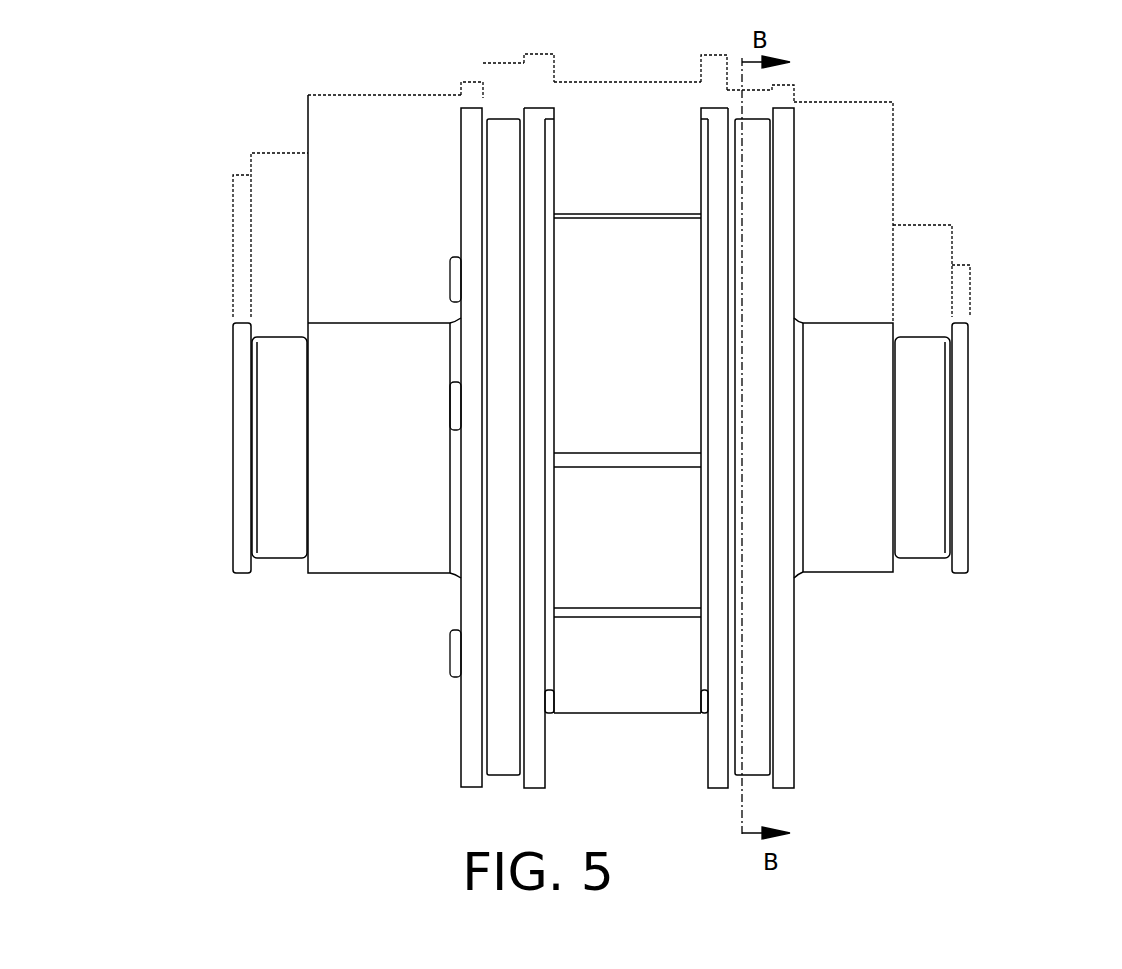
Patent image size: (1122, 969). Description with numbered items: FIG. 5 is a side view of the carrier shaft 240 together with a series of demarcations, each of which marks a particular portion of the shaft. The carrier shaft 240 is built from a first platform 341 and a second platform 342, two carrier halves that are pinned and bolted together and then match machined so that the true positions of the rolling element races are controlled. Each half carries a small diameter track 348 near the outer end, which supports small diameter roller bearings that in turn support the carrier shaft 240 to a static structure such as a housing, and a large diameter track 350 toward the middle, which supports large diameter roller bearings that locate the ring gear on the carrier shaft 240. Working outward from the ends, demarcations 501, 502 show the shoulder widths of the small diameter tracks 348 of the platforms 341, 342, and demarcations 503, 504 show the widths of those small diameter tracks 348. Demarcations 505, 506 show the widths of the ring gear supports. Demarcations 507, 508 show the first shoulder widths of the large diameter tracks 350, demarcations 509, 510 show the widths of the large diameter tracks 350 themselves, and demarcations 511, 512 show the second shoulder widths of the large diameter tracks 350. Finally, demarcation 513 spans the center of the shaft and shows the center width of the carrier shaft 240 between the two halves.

The carrier shaft 240 is at (1098, 103).
The first platform 341 is at (168, 692).
The second platform 342 is at (1022, 661).
The small diameter track 348 is at (278, 450).
The large diameter track 350 is at (629, 395).
The demarcation 501 is at (232, 363).
The demarcation 502 is at (971, 405).
The demarcation 503 is at (279, 221).
The demarcation 504 is at (922, 258).
The demarcation 505 is at (384, 374).
The demarcation 506 is at (843, 329).
The demarcation 507 is at (464, 422).
The demarcation 508 is at (772, 85).
The demarcation 509 is at (503, 407).
The demarcation 510 is at (755, 92).
The demarcation 511 is at (540, 406).
The demarcation 512 is at (718, 410).
The demarcation 513 is at (627, 382).